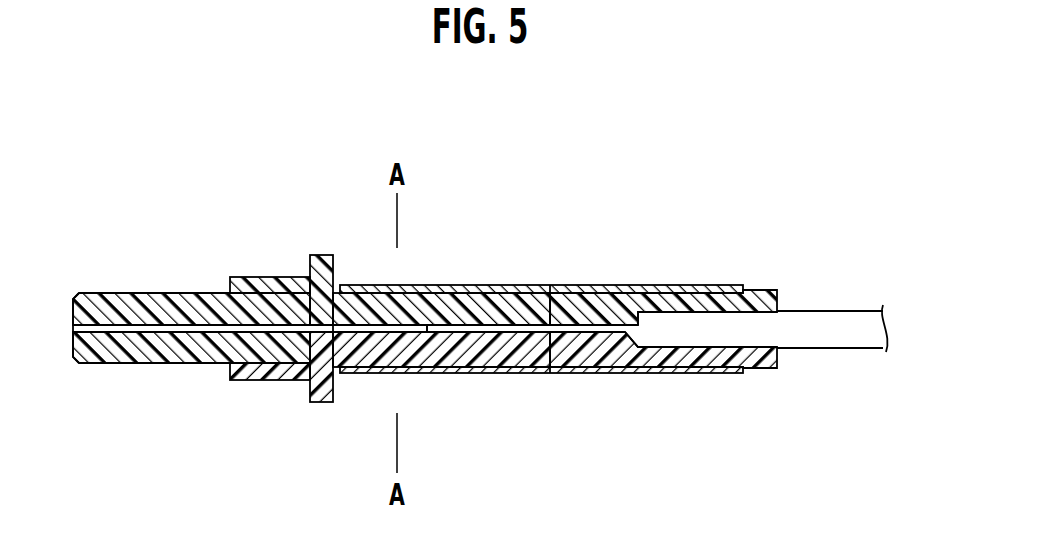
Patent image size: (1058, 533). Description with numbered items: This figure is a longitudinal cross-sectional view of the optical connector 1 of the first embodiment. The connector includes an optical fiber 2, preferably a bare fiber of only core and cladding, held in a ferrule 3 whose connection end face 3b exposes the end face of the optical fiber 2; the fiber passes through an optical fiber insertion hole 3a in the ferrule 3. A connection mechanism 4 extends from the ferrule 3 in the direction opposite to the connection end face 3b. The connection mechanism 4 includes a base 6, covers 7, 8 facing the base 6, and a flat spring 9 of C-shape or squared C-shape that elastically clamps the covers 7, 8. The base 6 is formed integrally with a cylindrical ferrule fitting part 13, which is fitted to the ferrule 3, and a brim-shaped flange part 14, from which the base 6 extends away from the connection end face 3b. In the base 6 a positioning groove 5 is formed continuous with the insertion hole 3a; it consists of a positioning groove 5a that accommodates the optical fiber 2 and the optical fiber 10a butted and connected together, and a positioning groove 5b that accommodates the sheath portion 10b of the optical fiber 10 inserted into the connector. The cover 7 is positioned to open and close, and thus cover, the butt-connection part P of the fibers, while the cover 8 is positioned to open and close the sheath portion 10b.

The optical connector 1 is at (554, 218).
The optical fiber 2 is at (197, 327).
The ferrule 3 is at (137, 312).
The optical fiber insertion hole 3a is at (170, 334).
The connection end face 3b is at (65, 312).
The connection mechanism 4 is at (442, 277).
The positioning groove 5 is at (389, 334).
The positioning groove 5a is at (352, 334).
The positioning groove 5b is at (711, 344).
The base 6 is at (492, 346).
The cover 7 is at (352, 307).
The cover 8 is at (630, 302).
The flat spring 9 is at (582, 284).
The optical fiber 10 is at (827, 322).
The optical fiber 10a is at (492, 326).
The sheath portion 10b is at (685, 320).
The ferrule fitting part 13 is at (265, 283).
The flange part 14 is at (322, 256).
The butt-connection part P is at (428, 333).